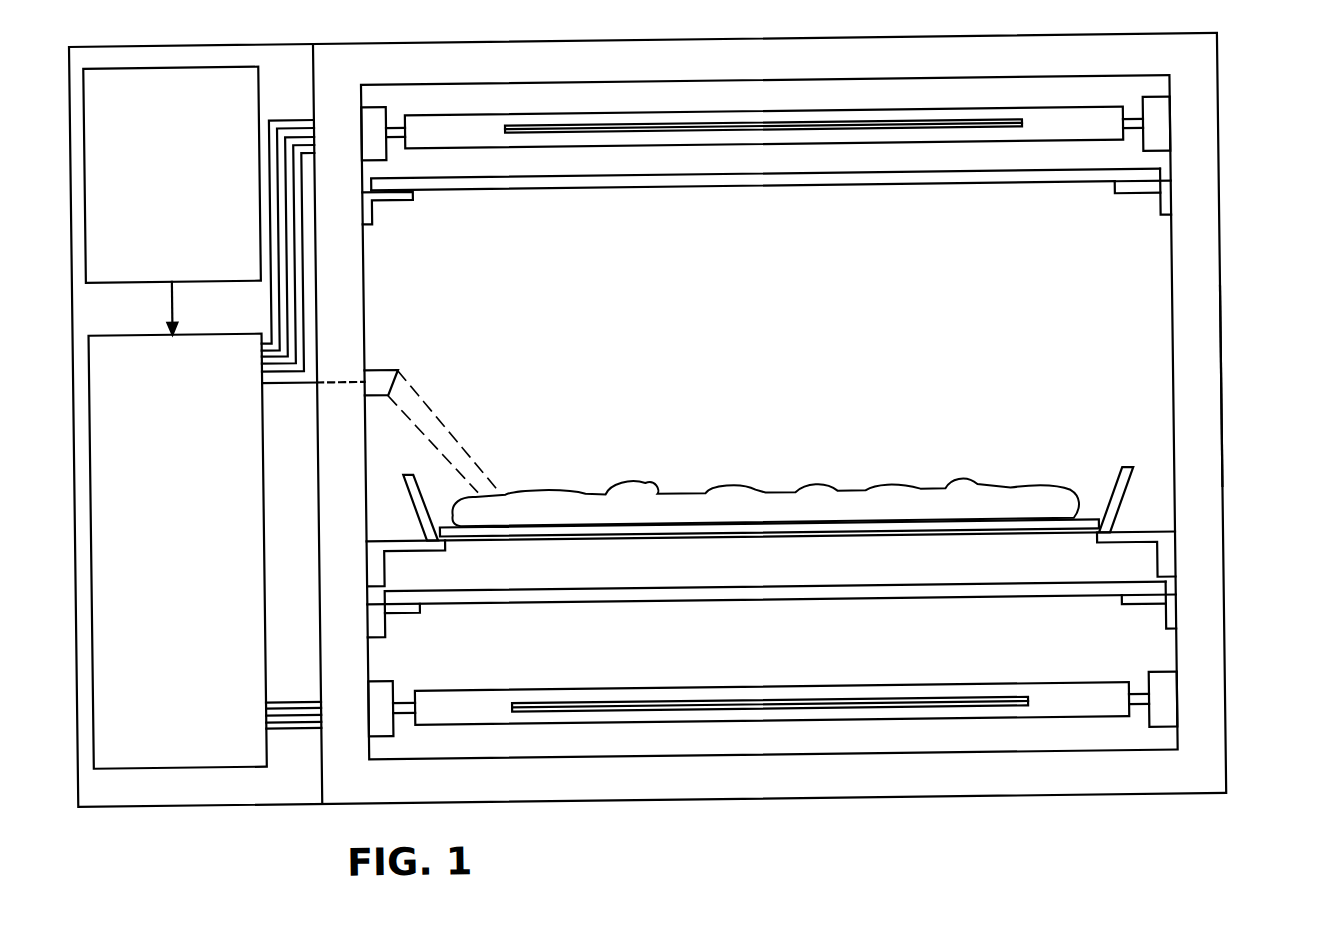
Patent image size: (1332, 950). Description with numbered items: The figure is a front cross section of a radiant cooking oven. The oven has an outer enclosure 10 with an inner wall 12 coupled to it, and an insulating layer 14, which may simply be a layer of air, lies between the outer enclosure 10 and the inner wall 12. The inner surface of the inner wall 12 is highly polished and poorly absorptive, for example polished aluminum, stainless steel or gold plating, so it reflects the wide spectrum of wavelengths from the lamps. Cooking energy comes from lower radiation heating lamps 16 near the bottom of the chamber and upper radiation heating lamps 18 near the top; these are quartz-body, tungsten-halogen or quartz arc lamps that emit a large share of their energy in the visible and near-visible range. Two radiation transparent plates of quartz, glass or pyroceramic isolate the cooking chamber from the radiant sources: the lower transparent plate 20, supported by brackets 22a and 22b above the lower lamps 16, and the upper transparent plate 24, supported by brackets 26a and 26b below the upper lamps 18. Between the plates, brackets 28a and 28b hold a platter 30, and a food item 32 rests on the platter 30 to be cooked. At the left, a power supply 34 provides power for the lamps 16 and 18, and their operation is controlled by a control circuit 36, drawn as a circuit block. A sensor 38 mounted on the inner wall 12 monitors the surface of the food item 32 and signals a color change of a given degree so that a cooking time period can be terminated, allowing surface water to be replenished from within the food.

The outer enclosure 10 is at (1218, 89).
The inner wall 12 is at (1169, 311).
The insulating layer 14 is at (1206, 387).
The lower radiation heating lamps 16 is at (910, 695).
The upper radiation heating lamps 18 is at (981, 119).
The lower transparent plate 20 is at (731, 603).
The bracket 22a is at (370, 634).
The bracket 22b is at (1155, 630).
The upper transparent plate 24 is at (788, 194).
The bracket 26a is at (372, 205).
The bracket 26b is at (1150, 214).
The bracket 28a is at (394, 548).
The bracket 28b is at (1136, 545).
The platter 30 is at (425, 492).
The food item 32 is at (703, 505).
The power supply 34 is at (156, 253).
The control circuit 36 is at (154, 740).
The sensor 38 is at (389, 373).